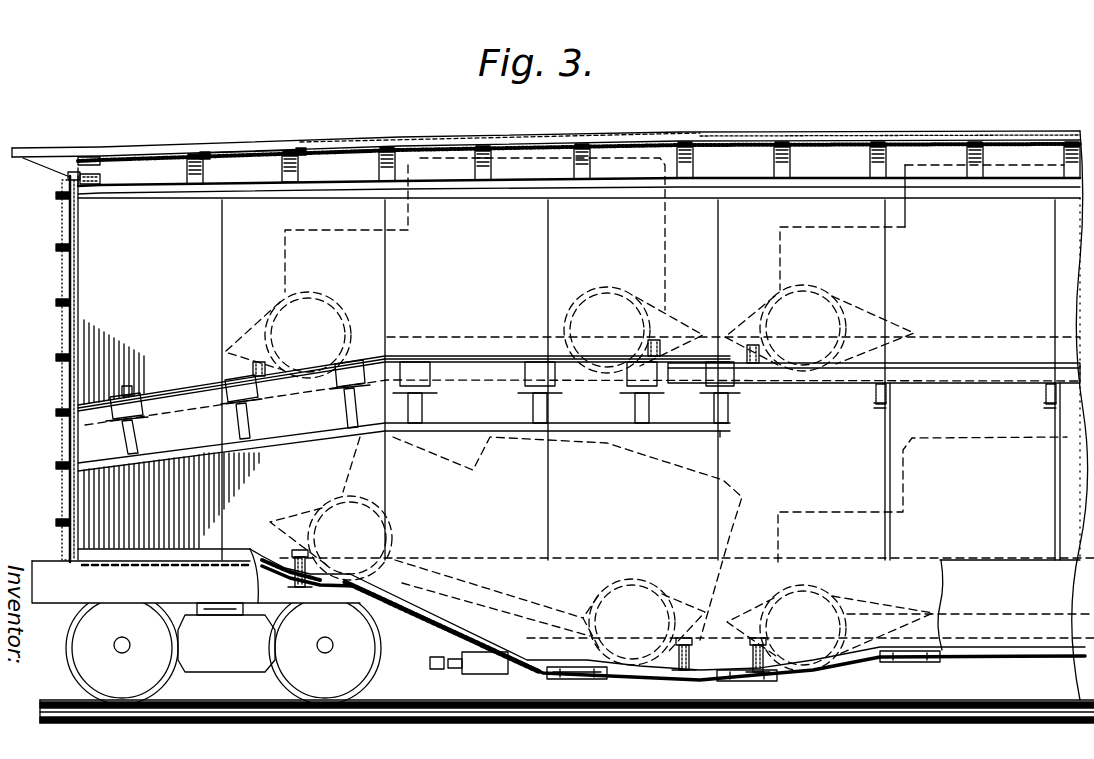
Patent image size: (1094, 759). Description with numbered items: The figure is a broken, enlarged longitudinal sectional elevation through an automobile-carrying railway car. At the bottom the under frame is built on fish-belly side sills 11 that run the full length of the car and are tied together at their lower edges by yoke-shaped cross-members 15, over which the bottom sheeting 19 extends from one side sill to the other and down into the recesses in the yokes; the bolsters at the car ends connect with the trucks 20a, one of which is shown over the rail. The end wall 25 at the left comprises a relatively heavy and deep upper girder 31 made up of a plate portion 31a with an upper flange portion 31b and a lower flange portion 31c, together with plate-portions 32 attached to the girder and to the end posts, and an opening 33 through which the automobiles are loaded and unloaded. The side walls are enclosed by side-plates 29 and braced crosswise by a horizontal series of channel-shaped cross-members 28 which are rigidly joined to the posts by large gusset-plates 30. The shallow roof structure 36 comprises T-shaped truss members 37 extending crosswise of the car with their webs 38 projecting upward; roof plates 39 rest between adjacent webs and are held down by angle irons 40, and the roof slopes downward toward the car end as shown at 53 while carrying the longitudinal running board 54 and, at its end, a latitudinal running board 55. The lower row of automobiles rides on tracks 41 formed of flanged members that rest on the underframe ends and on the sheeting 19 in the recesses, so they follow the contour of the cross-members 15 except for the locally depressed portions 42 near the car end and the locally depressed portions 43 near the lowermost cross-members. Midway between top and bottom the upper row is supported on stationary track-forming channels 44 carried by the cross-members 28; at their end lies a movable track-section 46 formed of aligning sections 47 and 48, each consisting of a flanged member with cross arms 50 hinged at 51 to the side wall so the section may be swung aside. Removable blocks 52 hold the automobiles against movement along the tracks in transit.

The fish-belly side sill 11 is at (138, 578).
The cross-member 15 is at (436, 636).
The sheeting 19 is at (1040, 652).
The truck 20a is at (223, 648).
The end wall 25 is at (70, 326).
The channel-shaped cross-member 28 is at (878, 398).
The side-plate 29 is at (724, 288).
The gusset-plate 30 is at (891, 415).
The upper beam or girder 31 is at (90, 186).
The plate portion 31a is at (68, 177).
The upper flange portion 31b is at (88, 157).
The lower flange portion 31c is at (100, 179).
The plate-portion 32 is at (70, 262).
The opening 33 is at (70, 282).
The roof structure 36 is at (350, 180).
The truss member 37 is at (186, 166).
The web 38 is at (283, 150).
The plate 39 is at (238, 157).
The angle iron 40 is at (205, 152).
The track 41 is at (452, 634).
The locally depressed portion 42 is at (316, 588).
The locally depressed portion 43 is at (655, 673).
The stationary track-forming channel 44 is at (858, 378).
The movable track-section 46 is at (462, 357).
The aligning section 47 is at (486, 370).
The aligning section 48 is at (180, 403).
The cross member or arm 50 is at (524, 398).
The hinge 51 is at (126, 386).
The block 52 is at (308, 572).
The sloped roof end 53 is at (378, 138).
The longitudinal running board 54 is at (815, 138).
The latitudinal running board 55 is at (127, 147).